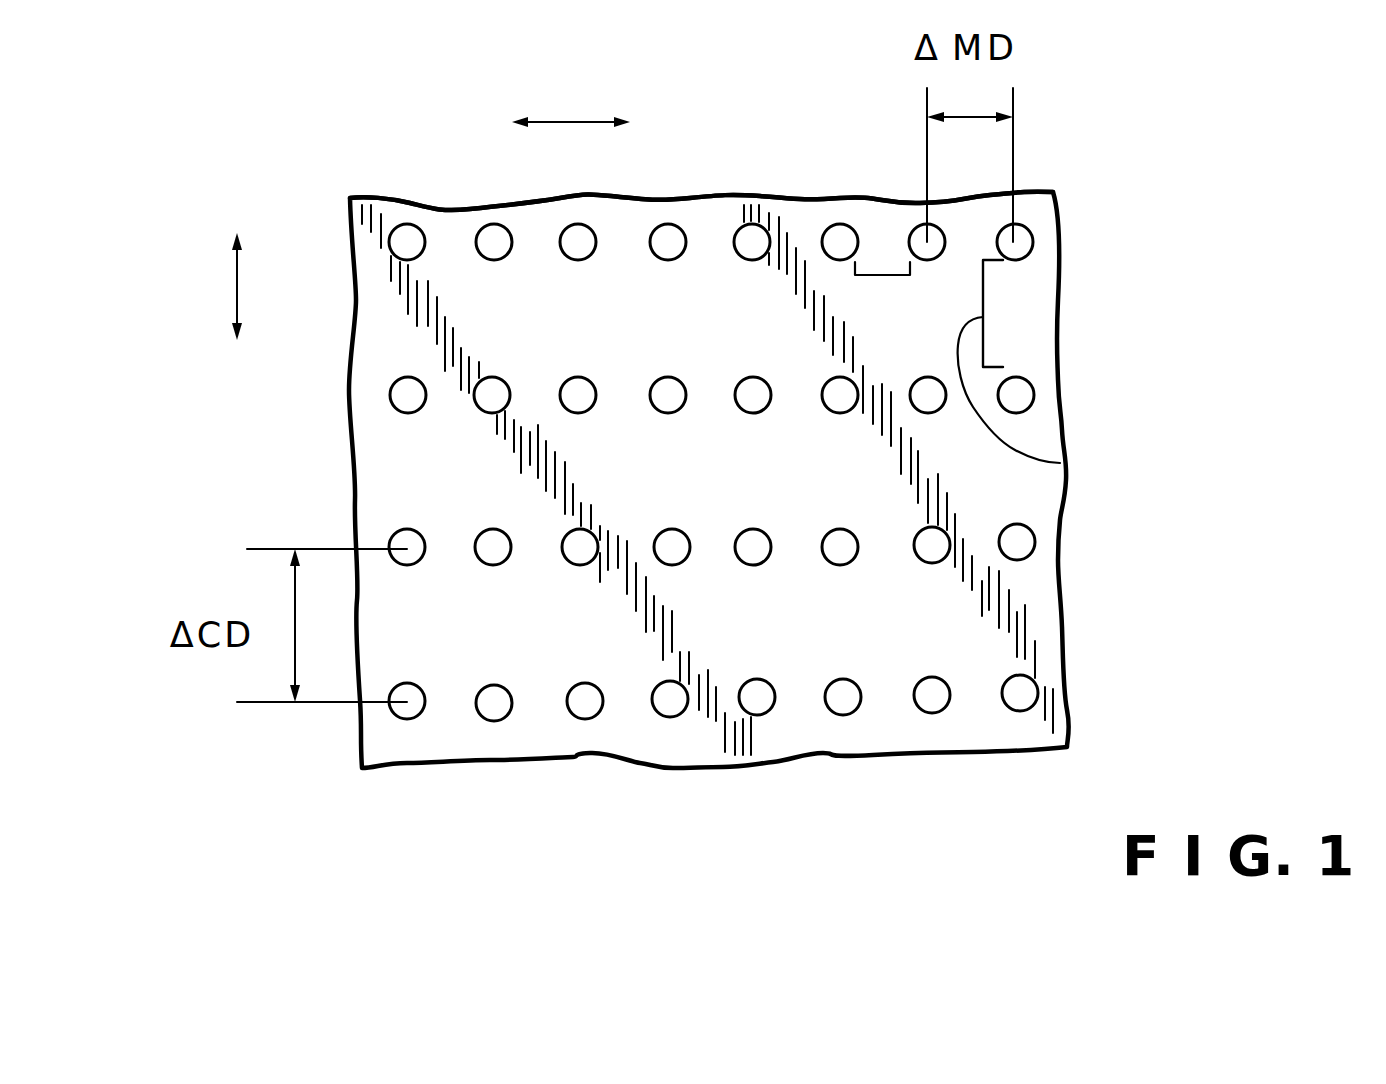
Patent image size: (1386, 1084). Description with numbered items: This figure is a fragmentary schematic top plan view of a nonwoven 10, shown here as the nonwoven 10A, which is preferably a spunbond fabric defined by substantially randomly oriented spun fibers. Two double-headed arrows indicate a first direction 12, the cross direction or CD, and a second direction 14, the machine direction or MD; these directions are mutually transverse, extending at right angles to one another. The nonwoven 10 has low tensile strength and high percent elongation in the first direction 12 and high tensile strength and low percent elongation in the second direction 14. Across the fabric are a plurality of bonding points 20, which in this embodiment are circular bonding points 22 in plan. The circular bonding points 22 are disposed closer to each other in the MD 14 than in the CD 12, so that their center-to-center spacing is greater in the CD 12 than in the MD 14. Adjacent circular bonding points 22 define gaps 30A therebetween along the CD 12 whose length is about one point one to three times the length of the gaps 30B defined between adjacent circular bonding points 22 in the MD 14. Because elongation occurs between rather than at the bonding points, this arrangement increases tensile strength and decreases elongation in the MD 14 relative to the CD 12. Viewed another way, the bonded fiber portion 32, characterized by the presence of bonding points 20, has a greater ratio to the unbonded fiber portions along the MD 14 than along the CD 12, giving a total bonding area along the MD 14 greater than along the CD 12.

The nonwoven 10 is at (416, 137).
The nonwoven 10A is at (340, 182).
The first direction 12 is at (237, 280).
The second direction 14 is at (571, 122).
The bonding points 20 is at (495, 262).
The circular bonding points 22 is at (670, 260).
The gaps 30A is at (1060, 463).
The gaps 30B is at (636, 420).
The bonded fiber portion 32 is at (1030, 383).